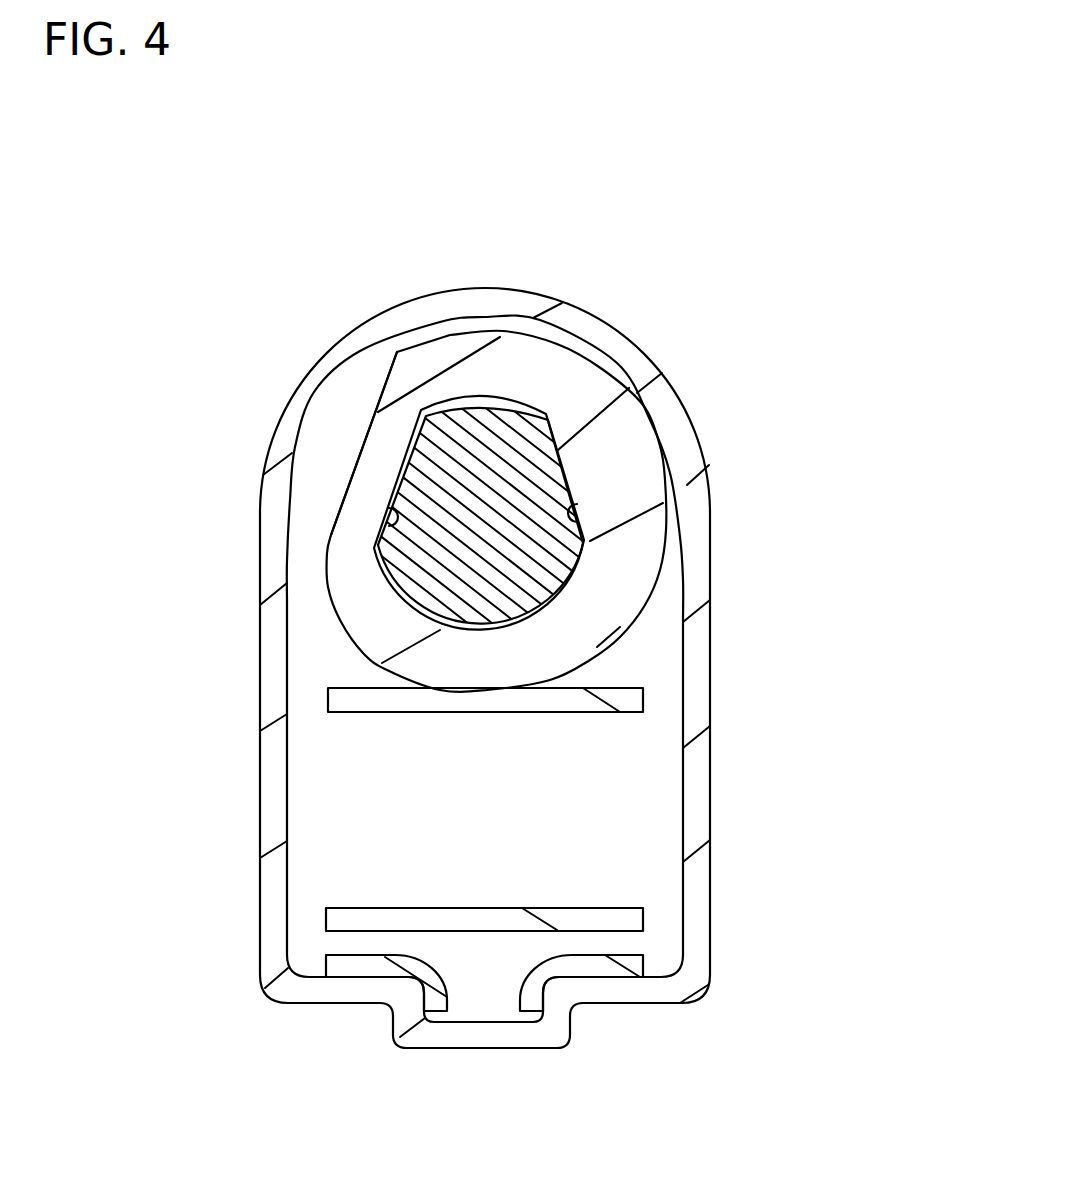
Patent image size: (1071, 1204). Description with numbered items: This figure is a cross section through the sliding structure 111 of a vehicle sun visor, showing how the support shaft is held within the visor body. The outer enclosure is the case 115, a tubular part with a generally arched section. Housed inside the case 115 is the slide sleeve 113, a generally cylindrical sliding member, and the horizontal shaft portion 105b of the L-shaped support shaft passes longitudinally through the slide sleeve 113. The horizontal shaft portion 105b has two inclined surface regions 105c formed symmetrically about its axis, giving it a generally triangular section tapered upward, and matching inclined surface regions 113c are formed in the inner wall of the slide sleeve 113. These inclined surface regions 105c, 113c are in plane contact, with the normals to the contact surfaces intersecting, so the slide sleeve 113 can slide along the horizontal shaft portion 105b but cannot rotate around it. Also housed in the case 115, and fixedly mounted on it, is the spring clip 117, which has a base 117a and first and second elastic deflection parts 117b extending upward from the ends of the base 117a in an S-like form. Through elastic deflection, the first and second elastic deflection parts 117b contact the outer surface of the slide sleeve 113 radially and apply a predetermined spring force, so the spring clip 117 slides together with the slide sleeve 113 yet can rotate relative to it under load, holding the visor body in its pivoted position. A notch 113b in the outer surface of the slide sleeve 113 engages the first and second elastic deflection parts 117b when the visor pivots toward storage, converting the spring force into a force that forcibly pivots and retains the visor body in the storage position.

The horizontal shaft portion 105b is at (479, 412).
The inclined surface regions 105c is at (418, 447).
The sliding structure 111 is at (701, 371).
The slide sleeve 113 is at (649, 471).
The notch 113b is at (356, 454).
The inclined surface regions 113c is at (387, 518).
The case 115 is at (256, 648).
The spring clip 117 is at (325, 906).
The base 117a is at (643, 963).
The first and second elastic deflection parts 117b is at (637, 700).